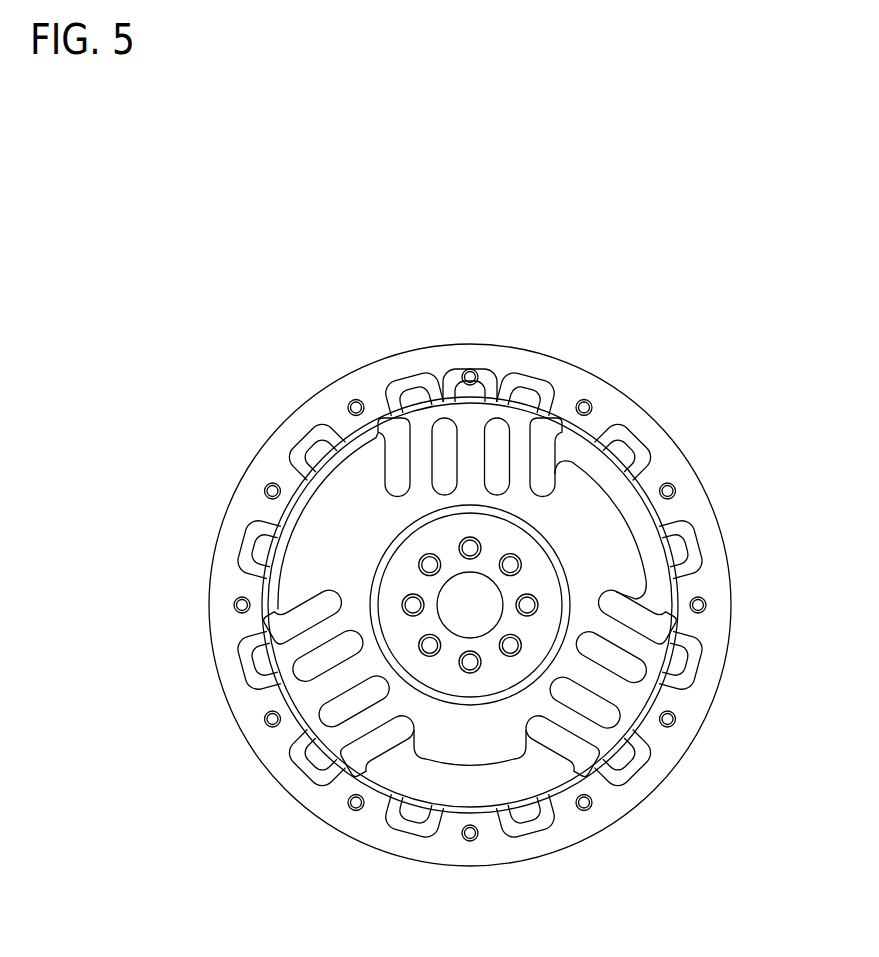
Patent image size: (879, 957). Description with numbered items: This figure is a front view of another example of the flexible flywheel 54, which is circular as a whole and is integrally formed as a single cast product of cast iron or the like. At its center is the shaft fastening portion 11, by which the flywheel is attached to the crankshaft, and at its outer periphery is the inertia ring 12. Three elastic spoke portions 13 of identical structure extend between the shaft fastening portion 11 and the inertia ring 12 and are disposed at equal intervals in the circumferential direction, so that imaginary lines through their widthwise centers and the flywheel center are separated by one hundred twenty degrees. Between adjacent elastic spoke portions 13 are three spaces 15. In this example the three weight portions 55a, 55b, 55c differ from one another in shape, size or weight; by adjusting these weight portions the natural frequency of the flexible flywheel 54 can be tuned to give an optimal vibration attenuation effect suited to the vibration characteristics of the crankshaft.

The flexible flywheel 54 is at (676, 388).
The inertia ring 12 is at (273, 437).
The spaces 15 is at (394, 433).
The elastic spoke portions 13 is at (572, 440).
The weight portion 55a is at (630, 510).
The weight portion 55b is at (472, 764).
The weight portion 55c is at (292, 562).
The shaft fastening portion 11 is at (545, 577).